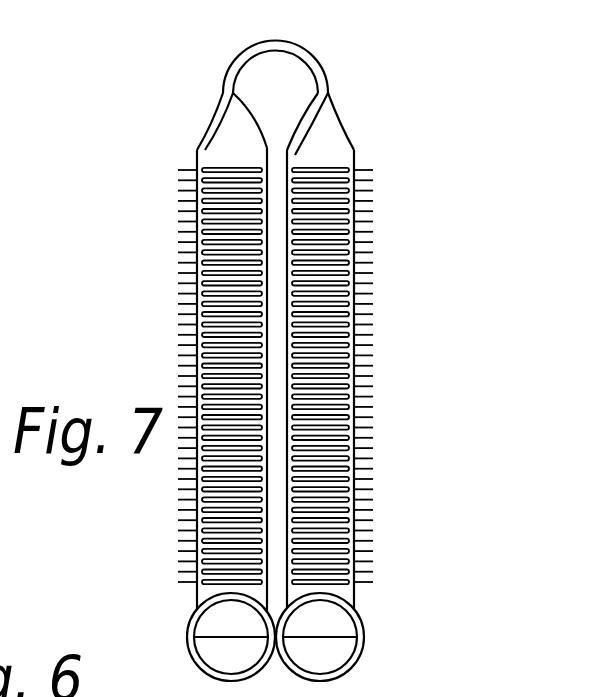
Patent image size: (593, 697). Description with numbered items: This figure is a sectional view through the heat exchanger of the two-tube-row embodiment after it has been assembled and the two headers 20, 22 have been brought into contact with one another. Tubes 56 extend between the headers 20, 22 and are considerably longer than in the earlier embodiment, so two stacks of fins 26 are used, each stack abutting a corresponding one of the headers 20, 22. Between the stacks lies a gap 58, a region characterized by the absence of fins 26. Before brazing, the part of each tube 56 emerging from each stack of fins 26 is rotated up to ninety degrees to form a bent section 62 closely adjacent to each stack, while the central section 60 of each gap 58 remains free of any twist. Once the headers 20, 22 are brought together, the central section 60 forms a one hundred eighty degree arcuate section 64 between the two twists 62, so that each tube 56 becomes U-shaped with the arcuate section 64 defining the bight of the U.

The gap 58 is at (348, 97).
The central section of the gap 60 is at (316, 54).
The arcuate section 64 is at (270, 55).
The bent section 62 is at (215, 142).
The fins 26 is at (182, 207).
The tubes 56 is at (347, 593).
The header 22 is at (195, 664).
The header 20 is at (362, 655).